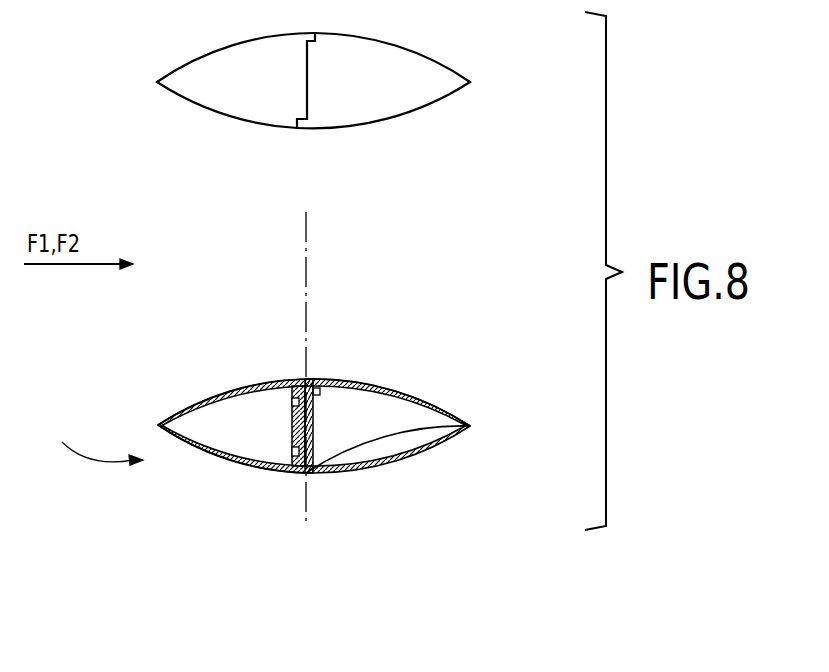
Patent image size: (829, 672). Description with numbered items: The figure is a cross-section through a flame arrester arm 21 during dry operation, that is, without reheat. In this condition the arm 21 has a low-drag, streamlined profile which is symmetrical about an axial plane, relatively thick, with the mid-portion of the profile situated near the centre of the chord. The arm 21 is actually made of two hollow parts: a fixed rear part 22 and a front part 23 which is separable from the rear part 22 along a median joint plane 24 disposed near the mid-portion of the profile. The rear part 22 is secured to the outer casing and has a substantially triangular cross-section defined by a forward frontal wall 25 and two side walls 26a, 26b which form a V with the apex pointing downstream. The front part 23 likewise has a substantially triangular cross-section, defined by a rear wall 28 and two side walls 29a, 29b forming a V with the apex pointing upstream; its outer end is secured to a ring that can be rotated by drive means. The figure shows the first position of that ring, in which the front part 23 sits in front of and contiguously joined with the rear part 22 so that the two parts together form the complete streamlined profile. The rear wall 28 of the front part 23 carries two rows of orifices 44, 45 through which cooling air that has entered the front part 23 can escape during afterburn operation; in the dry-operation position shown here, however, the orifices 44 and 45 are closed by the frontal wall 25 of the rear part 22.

The arm 21 is at (373, 63).
The rear part 22 is at (458, 398).
The front part 23 is at (97, 438).
The median joint plane 24 is at (307, 283).
The forward frontal wall 25 is at (318, 442).
The side wall 26a is at (365, 382).
The side wall 26b is at (407, 460).
The rear wall 28 is at (292, 428).
The side wall 29a is at (227, 390).
The side wall 29b is at (227, 460).
The orifices 44 is at (287, 398).
The orifices 45 is at (287, 452).